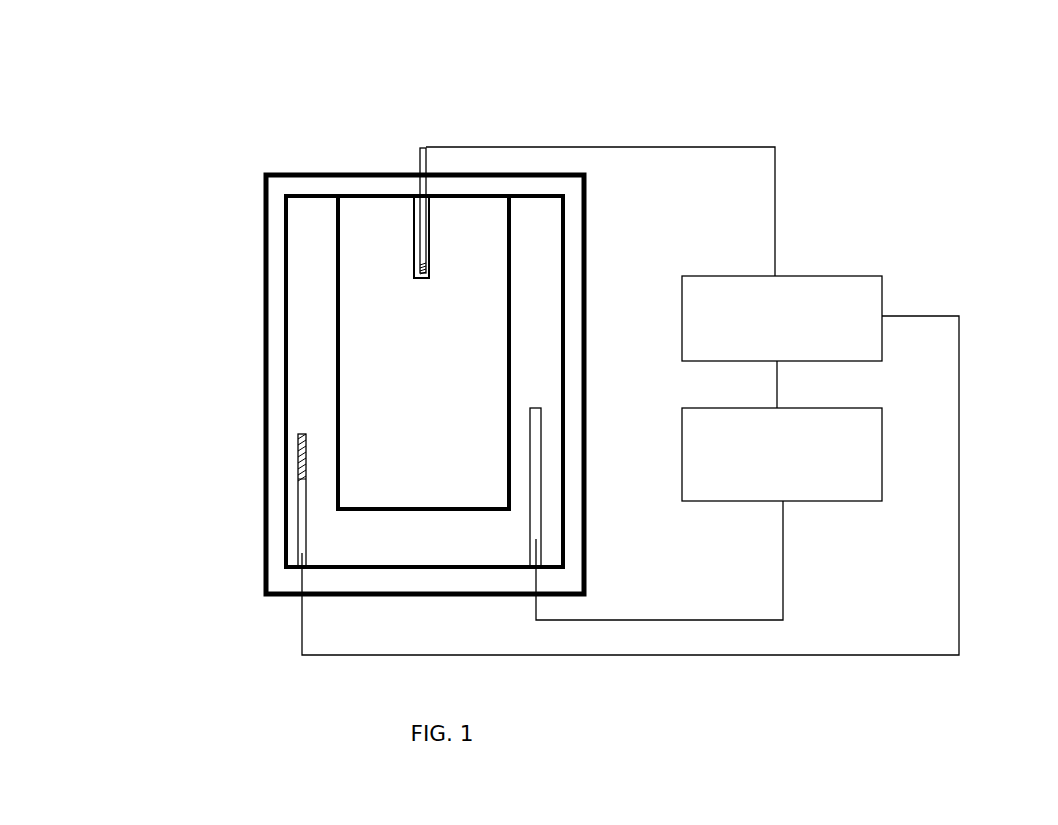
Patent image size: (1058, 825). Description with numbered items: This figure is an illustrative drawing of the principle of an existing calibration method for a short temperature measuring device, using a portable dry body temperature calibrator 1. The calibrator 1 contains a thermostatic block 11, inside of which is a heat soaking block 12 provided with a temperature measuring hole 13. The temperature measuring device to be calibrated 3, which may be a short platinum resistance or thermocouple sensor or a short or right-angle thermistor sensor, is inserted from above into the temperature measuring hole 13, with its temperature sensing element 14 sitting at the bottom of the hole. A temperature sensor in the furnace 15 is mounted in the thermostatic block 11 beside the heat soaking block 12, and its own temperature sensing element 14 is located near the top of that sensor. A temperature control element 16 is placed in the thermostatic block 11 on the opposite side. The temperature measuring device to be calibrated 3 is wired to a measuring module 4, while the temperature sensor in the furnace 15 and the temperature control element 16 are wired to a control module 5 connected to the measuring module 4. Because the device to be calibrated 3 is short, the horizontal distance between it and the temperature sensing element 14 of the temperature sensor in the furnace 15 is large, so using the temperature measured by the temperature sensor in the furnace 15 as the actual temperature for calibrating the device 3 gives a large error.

The dry body temperature calibrator 1 is at (263, 187).
The temperature measuring device to be calibrated 3 is at (417, 164).
The measuring module 4 is at (782, 342).
The control module 5 is at (782, 454).
The thermostatic block 11 is at (302, 216).
The heat soaking block 12 is at (370, 220).
The temperature measuring hole 13 is at (408, 263).
The temperature sensing element 14 is at (414, 279).
The temperature sensor in the furnace 15 is at (294, 550).
The temperature control element 16 is at (540, 500).